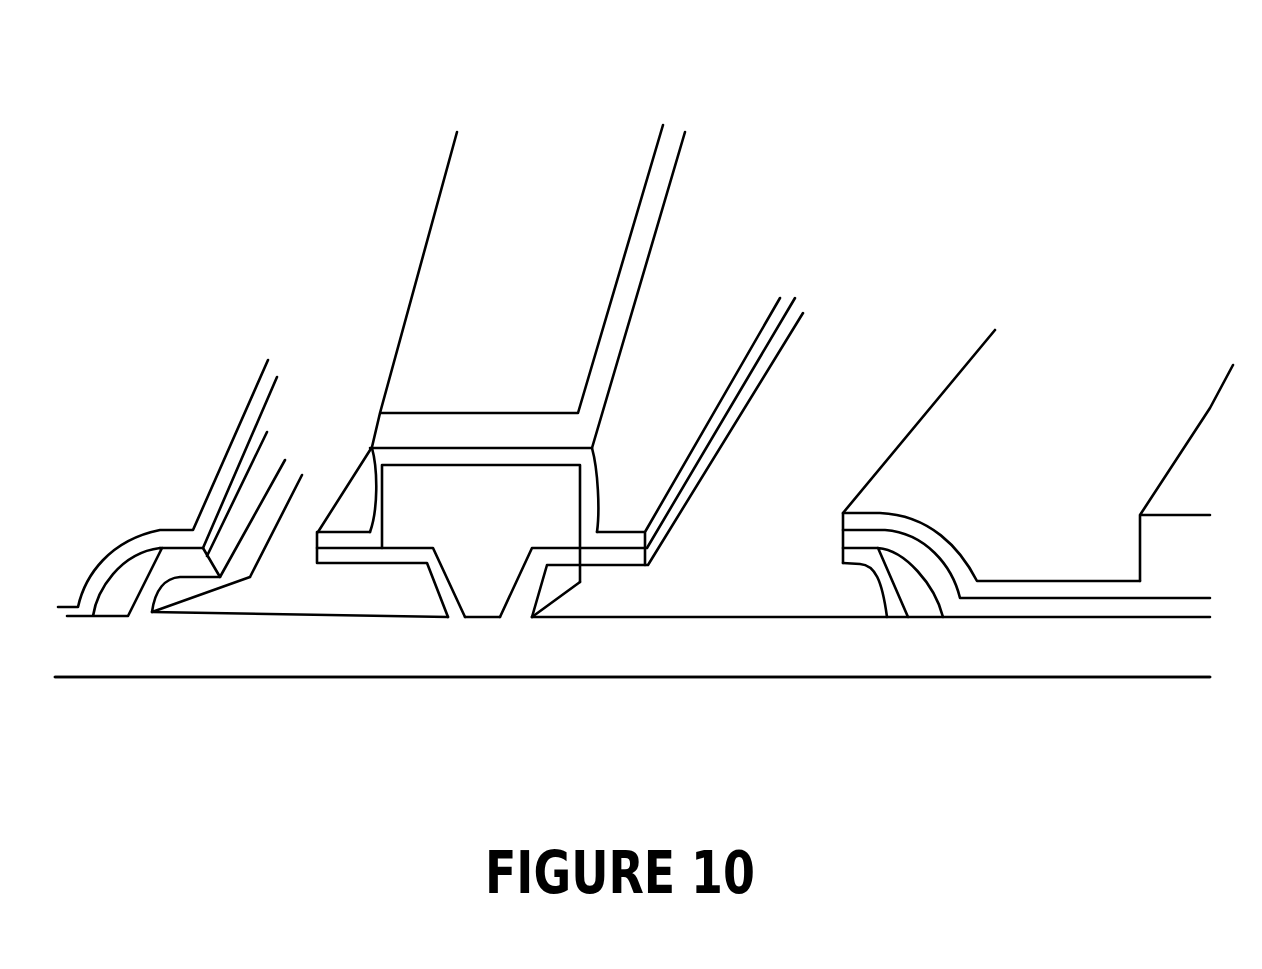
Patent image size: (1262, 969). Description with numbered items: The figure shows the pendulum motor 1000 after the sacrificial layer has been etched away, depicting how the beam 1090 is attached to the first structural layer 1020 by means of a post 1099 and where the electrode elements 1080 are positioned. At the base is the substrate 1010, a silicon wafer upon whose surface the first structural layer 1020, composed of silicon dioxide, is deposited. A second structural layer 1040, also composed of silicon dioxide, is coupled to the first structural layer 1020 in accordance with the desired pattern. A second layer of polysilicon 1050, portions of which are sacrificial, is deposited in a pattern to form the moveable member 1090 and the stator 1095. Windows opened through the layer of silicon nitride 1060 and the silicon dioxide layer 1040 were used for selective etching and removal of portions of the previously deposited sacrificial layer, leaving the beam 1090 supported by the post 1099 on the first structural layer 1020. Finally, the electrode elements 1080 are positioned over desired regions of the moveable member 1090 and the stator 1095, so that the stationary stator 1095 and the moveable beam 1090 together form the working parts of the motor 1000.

The semiconductor device structure 1000 is at (140, 43).
The substrate 1010 is at (900, 719).
The first structural layer 1020 is at (768, 658).
The second structural layer 1040 is at (332, 553).
The second layer of polysilicon 1050 is at (120, 597).
The layer of silicon nitride 1060 is at (332, 546).
The electrode elements 1080 is at (275, 367).
The beam 1090 is at (740, 279).
The stator 1095 is at (224, 462).
The post 1099 is at (565, 593).